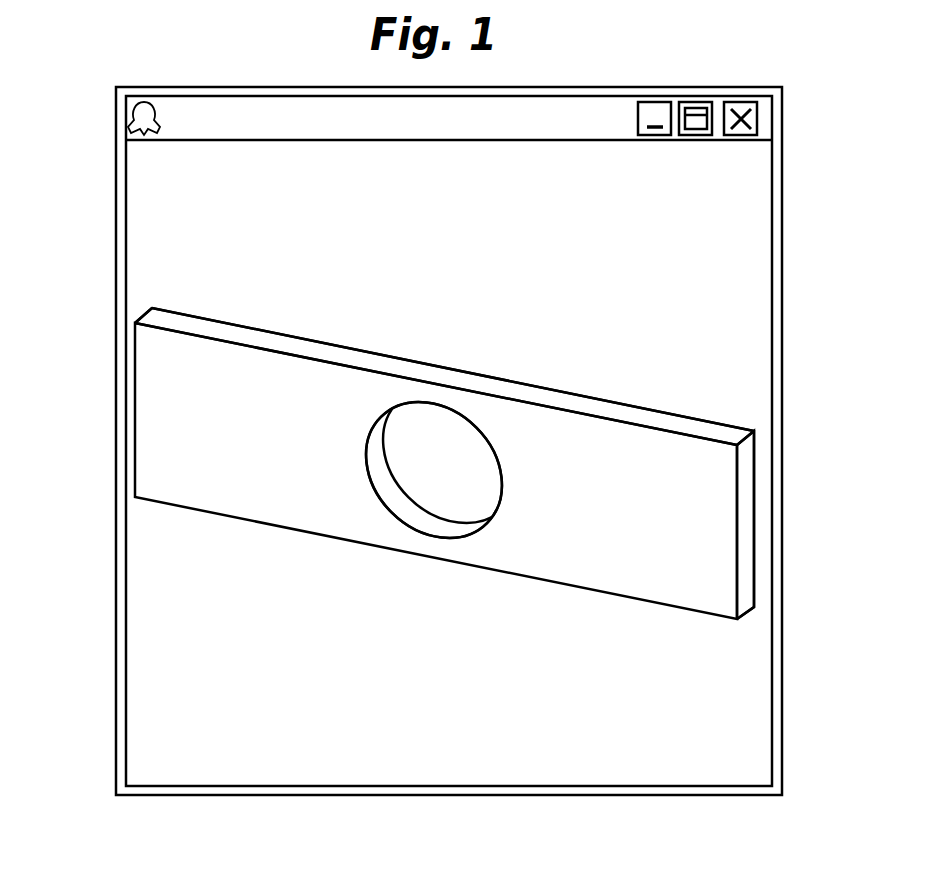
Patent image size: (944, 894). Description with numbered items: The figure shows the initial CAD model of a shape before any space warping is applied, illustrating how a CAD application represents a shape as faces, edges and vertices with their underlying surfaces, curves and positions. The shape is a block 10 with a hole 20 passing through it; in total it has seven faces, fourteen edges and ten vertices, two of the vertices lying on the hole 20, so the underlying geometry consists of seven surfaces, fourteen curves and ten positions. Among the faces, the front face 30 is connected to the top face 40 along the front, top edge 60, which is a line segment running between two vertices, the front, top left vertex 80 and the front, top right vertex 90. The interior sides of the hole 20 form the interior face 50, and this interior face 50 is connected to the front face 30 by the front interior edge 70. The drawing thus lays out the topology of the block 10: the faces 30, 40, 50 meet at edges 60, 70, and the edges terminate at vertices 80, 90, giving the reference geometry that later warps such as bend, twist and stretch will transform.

The block 10 is at (134, 364).
The hole 20 is at (398, 445).
The front face 30 is at (681, 443).
The top face 40 is at (638, 414).
The interior face 50 is at (395, 505).
The front top edge 60 is at (206, 334).
The front interior edge 70 is at (500, 500).
The front top left vertex 80 is at (132, 320).
The front top right vertex 90 is at (745, 448).